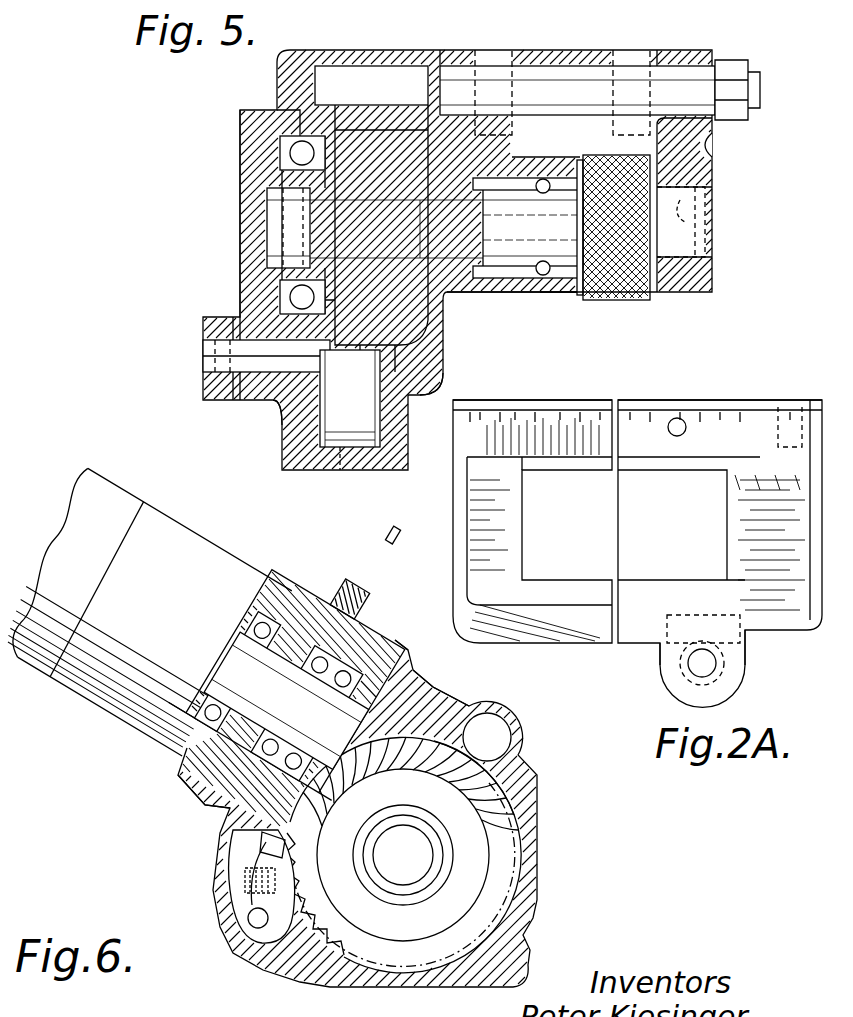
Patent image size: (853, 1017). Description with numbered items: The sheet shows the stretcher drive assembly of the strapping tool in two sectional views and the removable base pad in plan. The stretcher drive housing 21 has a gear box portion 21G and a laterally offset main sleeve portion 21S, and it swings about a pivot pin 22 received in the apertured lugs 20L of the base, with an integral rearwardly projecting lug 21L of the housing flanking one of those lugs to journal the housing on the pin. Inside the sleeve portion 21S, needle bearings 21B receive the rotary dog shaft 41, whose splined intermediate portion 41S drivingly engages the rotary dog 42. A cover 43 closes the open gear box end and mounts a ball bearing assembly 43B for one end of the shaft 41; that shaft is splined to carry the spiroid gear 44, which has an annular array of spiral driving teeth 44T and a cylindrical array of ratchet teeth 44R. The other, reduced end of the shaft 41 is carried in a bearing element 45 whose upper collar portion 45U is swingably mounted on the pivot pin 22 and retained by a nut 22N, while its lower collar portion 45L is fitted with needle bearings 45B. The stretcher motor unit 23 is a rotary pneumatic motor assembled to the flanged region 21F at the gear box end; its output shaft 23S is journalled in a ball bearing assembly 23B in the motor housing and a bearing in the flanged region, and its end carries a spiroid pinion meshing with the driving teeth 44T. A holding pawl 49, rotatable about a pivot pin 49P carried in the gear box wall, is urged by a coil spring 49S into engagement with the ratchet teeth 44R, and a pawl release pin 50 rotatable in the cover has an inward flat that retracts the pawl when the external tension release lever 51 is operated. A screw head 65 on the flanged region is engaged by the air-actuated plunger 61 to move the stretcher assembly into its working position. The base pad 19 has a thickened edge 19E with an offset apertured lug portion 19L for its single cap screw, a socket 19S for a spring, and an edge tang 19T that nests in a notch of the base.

In FIG. 2A, the base pad 19 is at (750, 498).
In FIG. 2A, the edge tang 19T is at (630, 396).
In FIG. 2A, the socket 19S is at (683, 430).
In FIG. 2A, the thickened edge 19E is at (697, 623).
In FIG. 2A, the lug portion 19L is at (730, 667).
In FIG. 5, the apertured lugs 20L is at (497, 50).
In FIG. 6, the stretcher drive housing 21 is at (548, 885).
In FIG. 5, the rearwardly projecting lug 21L is at (450, 50).
In FIG. 5, the needle bearings 21B is at (463, 296).
In FIG. 6, the needle bearings 21B is at (400, 668).
In FIG. 5, the main sleeve portion 21S is at (547, 296).
In FIG. 5, the gear box portion 21G is at (437, 383).
In FIG. 6, the gear box portion 21G is at (436, 693).
In FIG. 6, the flanged region 21F is at (230, 812).
In FIG. 5, the pivot pin 22 is at (577, 90).
In FIG. 6, the pivot pin 22 is at (500, 737).
In FIG. 5, the nut 22N is at (760, 92).
In FIG. 6, the stretcher motor unit 23 is at (121, 470).
In FIG. 6, the ball bearing assembly 23B is at (258, 575).
In FIG. 6, the output shaft 23S is at (320, 718).
In FIG. 5, the rotary dog shaft 41 is at (537, 237).
In FIG. 6, the rotary dog shaft 41 is at (417, 855).
In FIG. 5, the splined intermediate portion 41S is at (616, 227).
In FIG. 5, the rotary dog 42 is at (625, 295).
In FIG. 5, the cover 43 is at (250, 205).
In FIG. 5, the ball bearing assembly 43B is at (290, 158).
In FIG. 5, the spiroid gear 44 is at (377, 125).
In FIG. 6, the spiroid gear 44 is at (493, 807).
In FIG. 5, the ratchet teeth 44R is at (345, 118).
In FIG. 5, the spiral driving teeth 44T is at (435, 336).
In FIG. 5, the bearing element 45 is at (707, 172).
In FIG. 5, the upper collar portion 45U is at (678, 58).
In FIG. 5, the needle bearings 45B is at (714, 225).
In FIG. 5, the lower collar portion 45L is at (682, 284).
In FIG. 5, the holding pawl 49 is at (358, 418).
In FIG. 6, the holding pawl 49 is at (480, 704).
In FIG. 5, the pivot pin 49P is at (375, 478).
In FIG. 6, the pivot pin 49P is at (257, 922).
In FIG. 6, the coil spring 49S is at (247, 878).
In FIG. 5, the pawl release pin 50 is at (253, 397).
In FIG. 6, the pawl release pin 50 is at (263, 848).
In FIG. 5, the tension release lever 51 is at (203, 332).
In FIG. 6, the plunger 61 is at (394, 542).
In FIG. 6, the screw head 65 is at (377, 572).